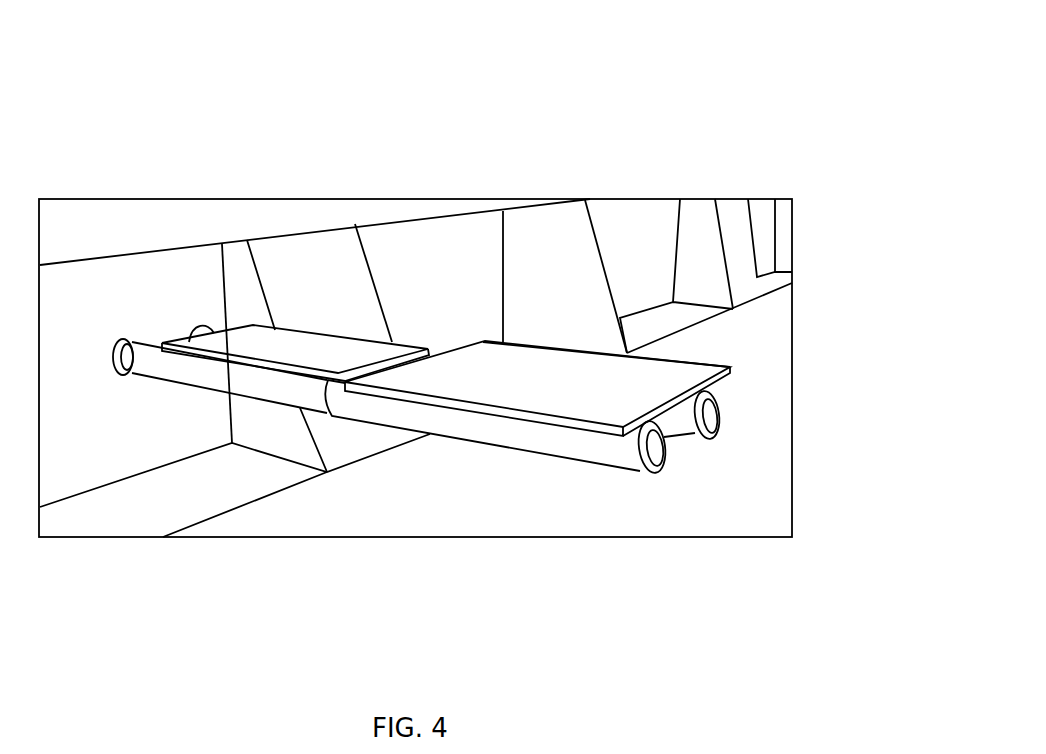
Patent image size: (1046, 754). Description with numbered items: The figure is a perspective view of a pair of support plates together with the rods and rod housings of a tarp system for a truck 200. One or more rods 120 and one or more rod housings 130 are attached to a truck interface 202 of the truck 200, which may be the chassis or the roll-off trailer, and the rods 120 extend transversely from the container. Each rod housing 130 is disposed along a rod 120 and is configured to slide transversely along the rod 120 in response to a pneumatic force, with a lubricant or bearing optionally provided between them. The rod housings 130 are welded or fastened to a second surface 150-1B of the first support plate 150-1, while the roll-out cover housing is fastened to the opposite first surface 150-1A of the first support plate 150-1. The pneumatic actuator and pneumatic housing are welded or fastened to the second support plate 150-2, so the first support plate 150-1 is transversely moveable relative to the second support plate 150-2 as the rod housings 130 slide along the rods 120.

The truck 200 is at (322, 74).
The truck interface 202 is at (167, 278).
The first support plate 150-1 is at (608, 360).
The first surface 150-1A is at (588, 367).
The second surface 150-1B is at (485, 413).
The second support plate 150-2 is at (290, 350).
The rod housing 130 is at (718, 392).
The rod 120 is at (712, 413).